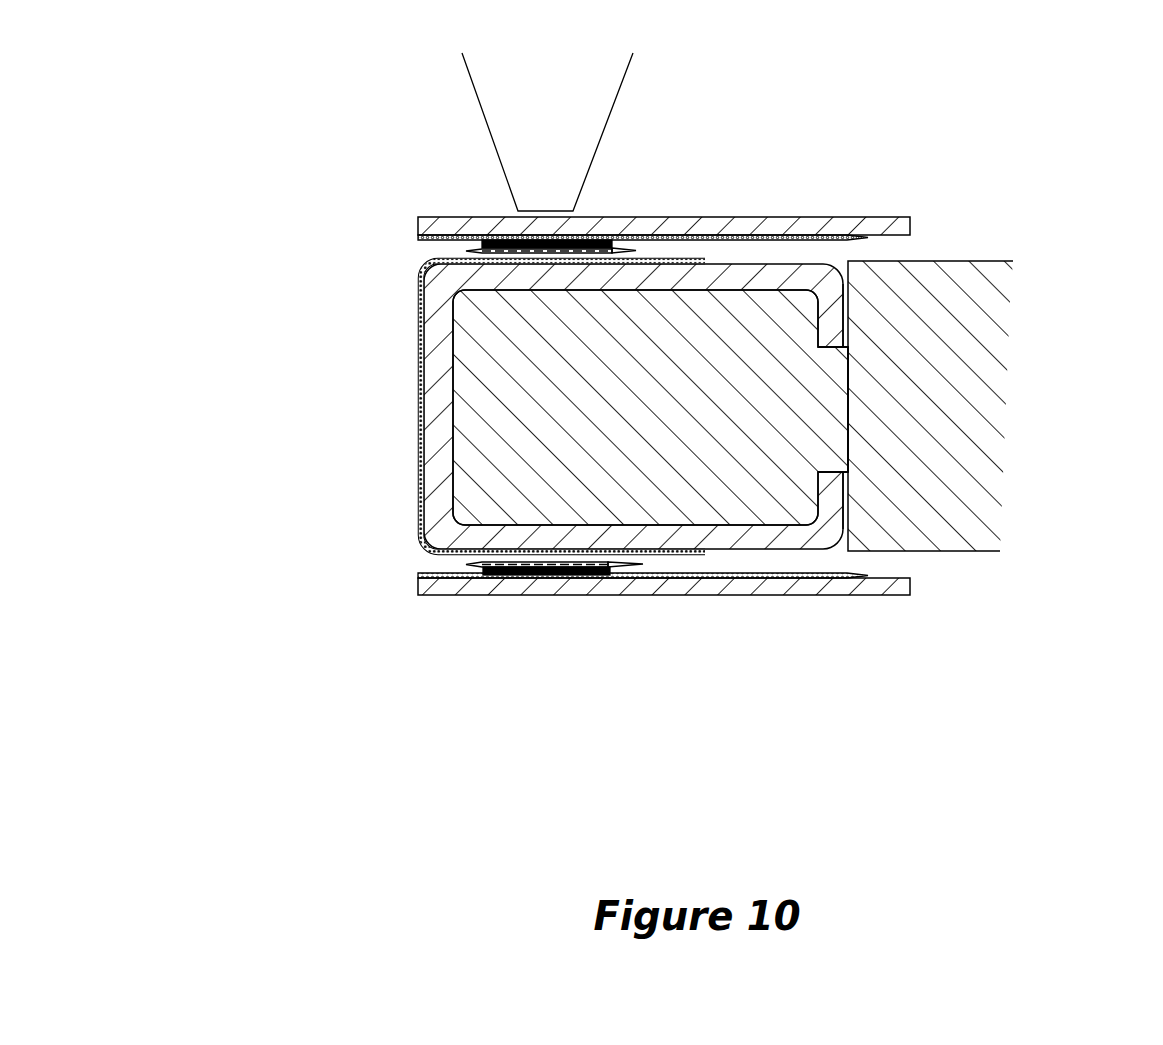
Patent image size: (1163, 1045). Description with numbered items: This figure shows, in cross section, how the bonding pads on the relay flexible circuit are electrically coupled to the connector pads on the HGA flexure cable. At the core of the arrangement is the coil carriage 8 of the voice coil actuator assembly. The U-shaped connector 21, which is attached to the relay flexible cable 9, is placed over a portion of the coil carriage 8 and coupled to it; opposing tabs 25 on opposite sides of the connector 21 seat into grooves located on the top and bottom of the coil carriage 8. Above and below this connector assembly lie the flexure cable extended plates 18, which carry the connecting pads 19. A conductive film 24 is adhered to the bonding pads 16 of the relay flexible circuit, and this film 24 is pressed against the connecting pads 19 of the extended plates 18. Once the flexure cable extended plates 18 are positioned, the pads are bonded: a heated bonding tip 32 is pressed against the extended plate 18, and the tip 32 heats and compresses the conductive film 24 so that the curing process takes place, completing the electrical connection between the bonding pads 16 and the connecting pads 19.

The coil carriage 8 is at (965, 420).
The relay flexible cable 9 is at (705, 553).
The bonding pads 16 is at (595, 242).
The flexure cable extended plates 18 is at (699, 228).
The connecting pads 19 is at (612, 246).
The U-shaped connector 21 is at (803, 277).
The conductive film 24 is at (470, 568).
The opposing tabs 25 is at (835, 480).
The heated bonding tip 32 is at (533, 117).